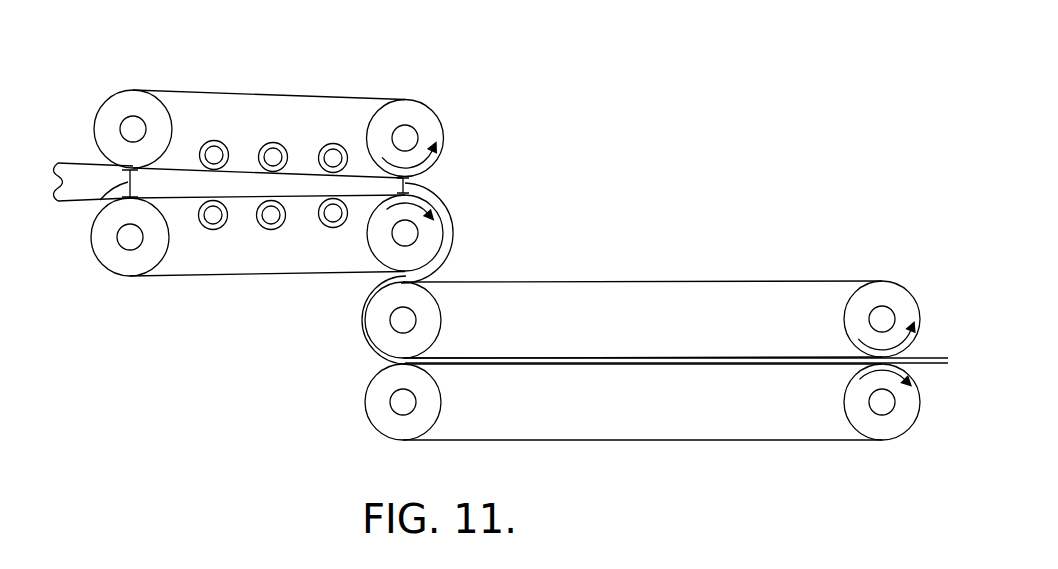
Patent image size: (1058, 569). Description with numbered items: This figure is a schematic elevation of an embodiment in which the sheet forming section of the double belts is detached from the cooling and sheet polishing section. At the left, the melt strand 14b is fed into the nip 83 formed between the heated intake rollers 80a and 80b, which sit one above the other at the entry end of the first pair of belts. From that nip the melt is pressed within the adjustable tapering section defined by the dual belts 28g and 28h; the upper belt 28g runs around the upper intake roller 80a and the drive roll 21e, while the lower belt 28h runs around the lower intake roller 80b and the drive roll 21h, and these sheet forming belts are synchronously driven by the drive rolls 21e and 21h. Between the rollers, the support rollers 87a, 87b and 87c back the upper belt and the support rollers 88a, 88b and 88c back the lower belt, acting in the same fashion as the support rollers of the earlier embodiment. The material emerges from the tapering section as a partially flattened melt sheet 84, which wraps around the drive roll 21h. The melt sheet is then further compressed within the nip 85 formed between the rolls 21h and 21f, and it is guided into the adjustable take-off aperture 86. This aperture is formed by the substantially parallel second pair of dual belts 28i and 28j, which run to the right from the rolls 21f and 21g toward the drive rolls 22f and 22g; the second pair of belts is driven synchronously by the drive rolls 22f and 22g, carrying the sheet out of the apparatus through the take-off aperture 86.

The melt strand 14b is at (72, 173).
The heated intake roller 80a is at (112, 112).
The heated intake roller 80b is at (112, 255).
The dual belt 28g is at (270, 92).
The dual belt 28h is at (228, 275).
The dual belt 28i is at (647, 281).
The dual belt 28j is at (647, 439).
The drive roll 21e is at (408, 112).
The drive roll 21h is at (430, 229).
The roll 21f is at (430, 313).
The roller 21g is at (432, 405).
The drive roll 22f is at (897, 293).
The drive roll 22g is at (895, 427).
The support roller 87a is at (213, 141).
The support roller 87b is at (272, 143).
The support roller 87c is at (332, 144).
The support roller 88a is at (213, 230).
The support roller 88b is at (271, 230).
The support roller 88c is at (333, 228).
The nip 83 is at (97, 203).
The partially flattened melt sheet 84 is at (408, 183).
The nip 85 is at (416, 282).
The adjustable take-off aperture 86 is at (397, 364).